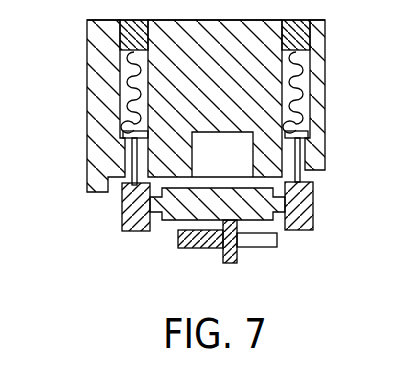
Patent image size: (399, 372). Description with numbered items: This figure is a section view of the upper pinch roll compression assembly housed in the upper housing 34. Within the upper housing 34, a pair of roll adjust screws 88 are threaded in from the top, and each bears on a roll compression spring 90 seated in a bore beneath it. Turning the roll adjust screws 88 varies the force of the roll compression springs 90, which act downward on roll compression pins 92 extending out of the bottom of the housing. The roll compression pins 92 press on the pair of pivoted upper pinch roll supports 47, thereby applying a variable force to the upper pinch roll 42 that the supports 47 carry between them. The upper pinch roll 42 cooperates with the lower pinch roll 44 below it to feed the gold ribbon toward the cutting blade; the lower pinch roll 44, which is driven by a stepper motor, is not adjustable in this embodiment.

The upper housing 34 is at (325, 108).
The roll adjust screw 88 is at (118, 33).
The roll compression spring 90 is at (122, 64).
The roll compression pin 92 is at (125, 130).
The upper pinch roll support 47 is at (122, 210).
The upper pinch roll 42 is at (166, 222).
The lower pinch roll 44 is at (277, 242).